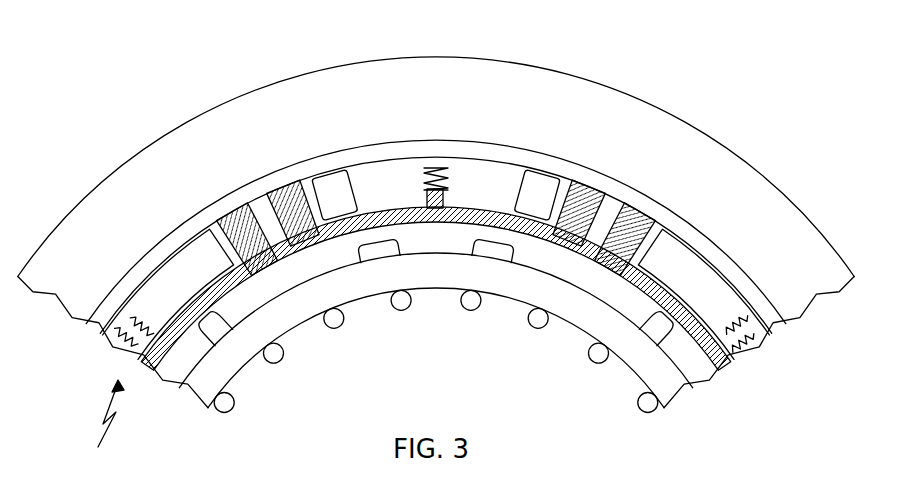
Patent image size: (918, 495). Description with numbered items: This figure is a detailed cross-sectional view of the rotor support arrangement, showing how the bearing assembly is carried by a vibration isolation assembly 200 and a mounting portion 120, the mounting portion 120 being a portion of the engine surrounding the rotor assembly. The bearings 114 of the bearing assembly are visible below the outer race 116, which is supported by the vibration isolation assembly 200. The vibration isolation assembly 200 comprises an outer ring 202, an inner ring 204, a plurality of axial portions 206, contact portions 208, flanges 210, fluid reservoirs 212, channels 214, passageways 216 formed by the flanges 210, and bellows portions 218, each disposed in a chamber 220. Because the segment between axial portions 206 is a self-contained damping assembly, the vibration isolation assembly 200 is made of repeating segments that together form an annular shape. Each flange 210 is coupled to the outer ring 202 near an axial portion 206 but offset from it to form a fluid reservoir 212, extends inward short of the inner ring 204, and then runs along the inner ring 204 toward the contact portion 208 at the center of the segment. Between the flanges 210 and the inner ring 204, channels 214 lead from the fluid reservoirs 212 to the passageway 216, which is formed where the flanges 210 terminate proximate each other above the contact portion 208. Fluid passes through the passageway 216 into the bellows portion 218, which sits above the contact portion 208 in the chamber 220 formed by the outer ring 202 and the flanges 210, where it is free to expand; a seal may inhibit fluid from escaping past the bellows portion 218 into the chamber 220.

The bearings 114 is at (226, 414).
The outer race 116 is at (196, 406).
The mounting portion 120 is at (418, 68).
The vibration isolation assembly 200 is at (96, 429).
The outer ring 202 is at (388, 142).
The inner ring 204 is at (224, 304).
The axial portions 206 is at (260, 203).
The contact portions 208 is at (433, 243).
The flanges 210 is at (344, 205).
The fluid reservoirs 212 is at (284, 190).
The channels 214 is at (353, 226).
The passageway 216 is at (446, 198).
The bellows portion 218 is at (436, 165).
The chamber 220 is at (403, 194).